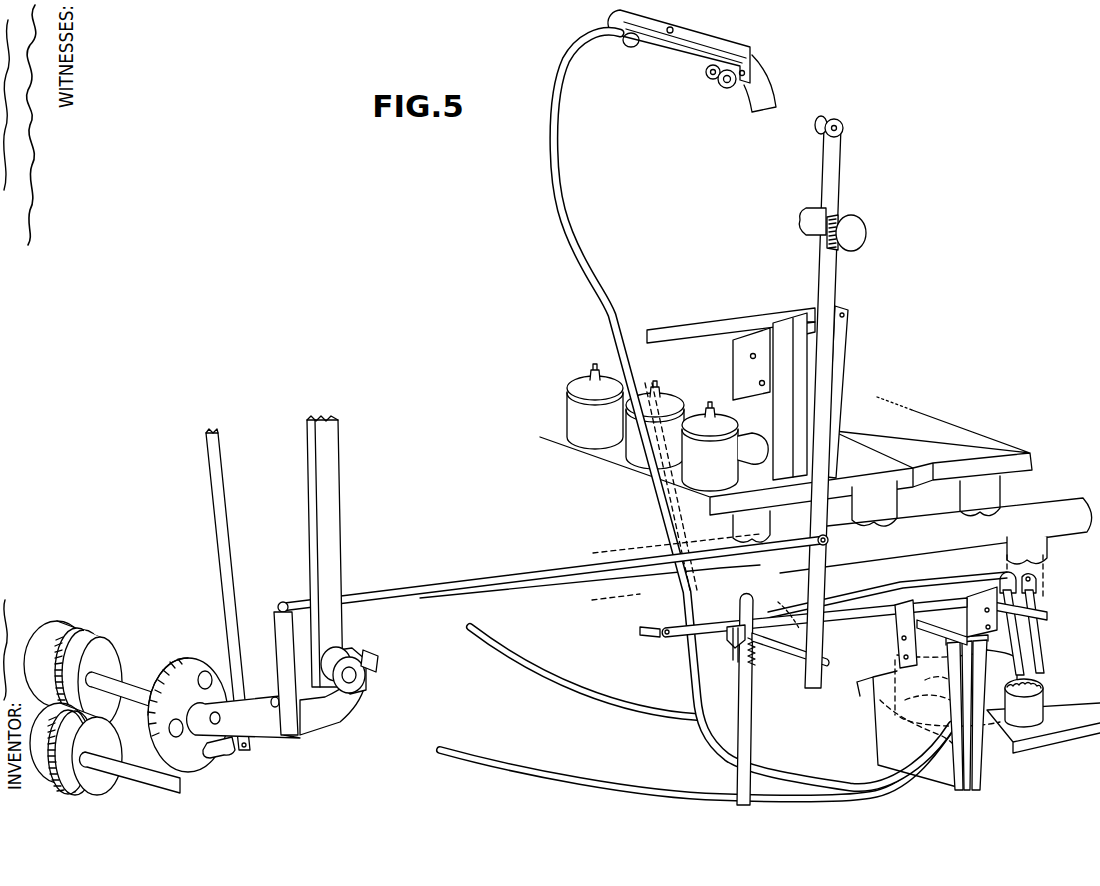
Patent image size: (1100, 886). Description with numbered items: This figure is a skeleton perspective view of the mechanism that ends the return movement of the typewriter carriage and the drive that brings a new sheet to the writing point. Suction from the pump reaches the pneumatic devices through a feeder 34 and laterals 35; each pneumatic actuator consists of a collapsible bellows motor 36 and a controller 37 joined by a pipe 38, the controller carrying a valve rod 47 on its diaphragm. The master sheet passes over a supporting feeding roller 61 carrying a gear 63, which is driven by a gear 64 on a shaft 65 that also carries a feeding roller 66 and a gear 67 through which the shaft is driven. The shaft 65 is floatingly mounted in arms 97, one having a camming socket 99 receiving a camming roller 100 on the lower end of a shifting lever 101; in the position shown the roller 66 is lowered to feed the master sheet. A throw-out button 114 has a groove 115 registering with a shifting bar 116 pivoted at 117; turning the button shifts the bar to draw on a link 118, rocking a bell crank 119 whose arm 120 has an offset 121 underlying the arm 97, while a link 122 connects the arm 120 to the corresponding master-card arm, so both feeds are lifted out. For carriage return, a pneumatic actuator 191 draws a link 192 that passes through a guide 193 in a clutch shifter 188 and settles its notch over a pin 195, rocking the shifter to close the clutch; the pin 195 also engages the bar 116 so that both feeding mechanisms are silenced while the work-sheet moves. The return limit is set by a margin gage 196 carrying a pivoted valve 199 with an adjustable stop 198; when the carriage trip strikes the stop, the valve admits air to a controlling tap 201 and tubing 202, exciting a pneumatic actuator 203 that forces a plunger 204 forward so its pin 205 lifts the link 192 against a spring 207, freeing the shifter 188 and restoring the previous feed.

The feeder 34 is at (756, 548).
The laterals 35 is at (961, 498).
The motor 36 is at (838, 410).
The controller 37 is at (637, 458).
The pipe 38 is at (752, 462).
The valve rod 47 is at (590, 380).
The supporting feeding roller 61 is at (76, 715).
The gear 63 is at (110, 768).
The gear 64 is at (120, 656).
The shaft 65 is at (135, 680).
The roller 66 is at (77, 630).
The gear 67 is at (208, 664).
The arm 97 is at (316, 706).
The camming socket 99 is at (371, 676).
The camming roller 100 is at (353, 657).
The shifting lever 101 is at (342, 518).
The throw-out button 114 is at (866, 237).
The groove 115 is at (832, 212).
The shifting bar 116 is at (833, 283).
The pivot 117 is at (843, 129).
The link 118 is at (548, 572).
The bell crank 119 is at (277, 645).
The arm 120 is at (270, 742).
The offset 121 is at (222, 756).
The link 122 is at (211, 534).
The clutch shifter 188 is at (751, 735).
The pneumatic actuator 191 is at (876, 735).
The link 192 is at (838, 628).
The guide 193 is at (733, 640).
The pin 195 is at (797, 650).
The margin gage 196 is at (772, 91).
The adjustable stop 198 is at (722, 87).
The valve 199 is at (712, 46).
The controlling tap 201 is at (632, 48).
The tubing 202 is at (549, 198).
The pneumatic actuator 203 is at (1041, 661).
The plunger 204 is at (913, 583).
The pin 205 is at (808, 615).
The spring 207 is at (760, 666).